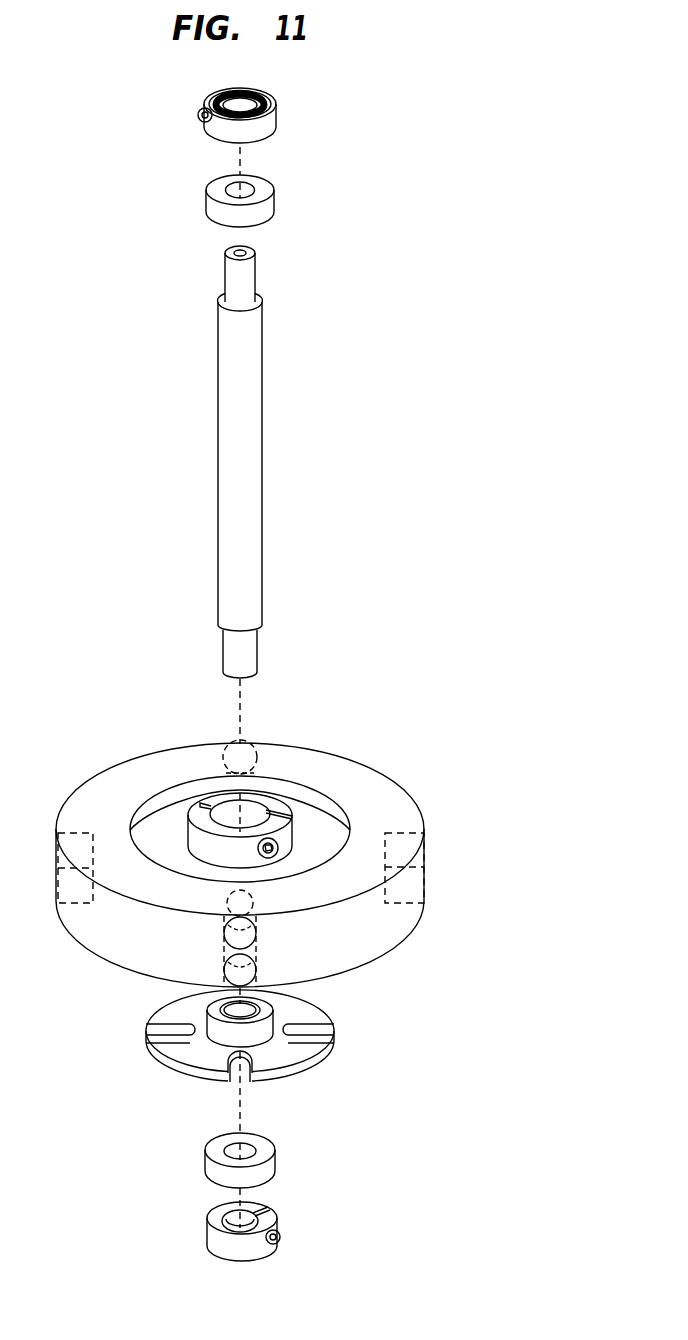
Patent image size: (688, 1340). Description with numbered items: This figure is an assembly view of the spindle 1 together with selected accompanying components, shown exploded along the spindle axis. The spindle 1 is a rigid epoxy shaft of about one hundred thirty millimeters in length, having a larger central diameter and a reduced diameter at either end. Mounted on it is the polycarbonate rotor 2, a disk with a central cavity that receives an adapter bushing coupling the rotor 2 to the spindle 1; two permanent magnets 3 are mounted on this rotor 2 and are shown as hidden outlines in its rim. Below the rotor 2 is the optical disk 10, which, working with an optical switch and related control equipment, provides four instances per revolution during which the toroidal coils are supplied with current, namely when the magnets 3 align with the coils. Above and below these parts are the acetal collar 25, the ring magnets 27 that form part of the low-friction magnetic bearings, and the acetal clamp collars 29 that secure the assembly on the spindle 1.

The spindle 1 is at (257, 270).
The rotor 2 is at (372, 786).
The permanent magnets 3 is at (423, 883).
The optical disk 10 is at (305, 1052).
The collar 25 is at (272, 800).
The ring magnet 27 is at (274, 200).
The clamp collar 29 is at (275, 112).